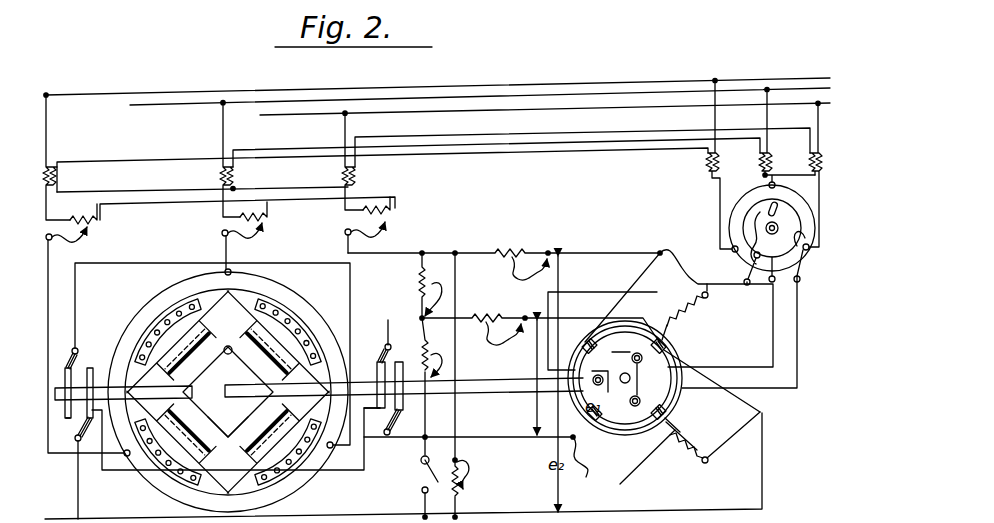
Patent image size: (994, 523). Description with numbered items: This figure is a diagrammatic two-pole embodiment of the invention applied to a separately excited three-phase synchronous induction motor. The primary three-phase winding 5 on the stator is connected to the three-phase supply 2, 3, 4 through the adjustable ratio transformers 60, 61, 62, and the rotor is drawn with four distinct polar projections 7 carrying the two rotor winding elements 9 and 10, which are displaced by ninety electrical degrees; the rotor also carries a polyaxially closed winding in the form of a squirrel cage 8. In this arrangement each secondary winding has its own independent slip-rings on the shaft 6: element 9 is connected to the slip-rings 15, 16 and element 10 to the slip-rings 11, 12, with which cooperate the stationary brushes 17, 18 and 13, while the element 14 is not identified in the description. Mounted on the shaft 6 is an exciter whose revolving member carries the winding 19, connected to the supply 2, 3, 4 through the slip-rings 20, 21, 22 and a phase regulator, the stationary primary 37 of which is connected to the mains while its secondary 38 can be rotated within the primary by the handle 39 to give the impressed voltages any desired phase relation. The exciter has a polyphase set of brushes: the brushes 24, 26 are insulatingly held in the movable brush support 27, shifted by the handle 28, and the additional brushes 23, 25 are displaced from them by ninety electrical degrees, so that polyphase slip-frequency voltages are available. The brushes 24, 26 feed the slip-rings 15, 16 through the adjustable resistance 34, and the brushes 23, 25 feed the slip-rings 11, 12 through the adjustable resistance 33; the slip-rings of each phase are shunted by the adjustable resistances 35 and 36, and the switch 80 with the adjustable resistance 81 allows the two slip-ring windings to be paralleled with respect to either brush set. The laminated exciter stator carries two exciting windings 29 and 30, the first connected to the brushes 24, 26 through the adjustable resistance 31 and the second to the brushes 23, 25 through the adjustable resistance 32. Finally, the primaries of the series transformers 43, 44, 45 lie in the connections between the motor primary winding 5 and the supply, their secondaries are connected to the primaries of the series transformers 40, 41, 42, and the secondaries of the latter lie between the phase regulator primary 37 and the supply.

The three-phase supply 2 is at (106, 100).
The three-phase supply 3 is at (190, 106).
The three-phase supply 4 is at (292, 117).
The primary three-phase winding 5 is at (280, 290).
The shaft 6 is at (492, 390).
The polar projections 7 is at (205, 297).
The squirrel cage 8 is at (290, 322).
The rotor winding element 9 is at (254, 334).
The rotor winding element 10 is at (260, 451).
The slip-ring 11 is at (91, 366).
The slip-ring 12 is at (67, 422).
The stationary brush 13 is at (70, 360).
The switch blade 14 is at (89, 426).
The slip-ring 15 is at (381, 412).
The slip-ring 16 is at (400, 362).
The stationary brush 17 is at (404, 422).
The stationary brush 18 is at (380, 365).
The exciter winding 19 is at (619, 334).
The slip-ring 20 is at (627, 352).
The slip-ring 21 is at (603, 391).
The slip-ring 22 is at (627, 408).
The exciter brush 23 is at (610, 303).
The exciter brush 24 is at (668, 347).
The exciter brush 25 is at (668, 412).
The exciter brush 26 is at (593, 441).
The movable brush support 27 is at (652, 440).
The handle 28 is at (656, 440).
The exciting winding 29 is at (706, 466).
The exciting winding 30 is at (696, 305).
The adjustable resistance 31 is at (595, 480).
The adjustable resistance 32 is at (667, 258).
The adjustable resistance 33 is at (505, 255).
The adjustable resistance 34 is at (541, 320).
The adjustable resistance 35 is at (436, 371).
The adjustable resistance 36 is at (476, 386).
The primary of phase regulator 37 is at (735, 201).
The secondary of phase regulator 38 is at (799, 252).
The handle 39 is at (766, 212).
The series transformer 40 is at (702, 164).
The series transformer 41 is at (771, 135).
The series transformer 42 is at (800, 175).
The series transformer 43 is at (66, 157).
The series transformer 44 is at (243, 160).
The series transformer 45 is at (364, 161).
The adjustable ratio transformer 60 is at (85, 328).
The adjustable ratio transformer 61 is at (258, 235).
The adjustable ratio transformer 62 is at (381, 225).
The switch 80 is at (420, 478).
The adjustable resistance 81 is at (418, 291).